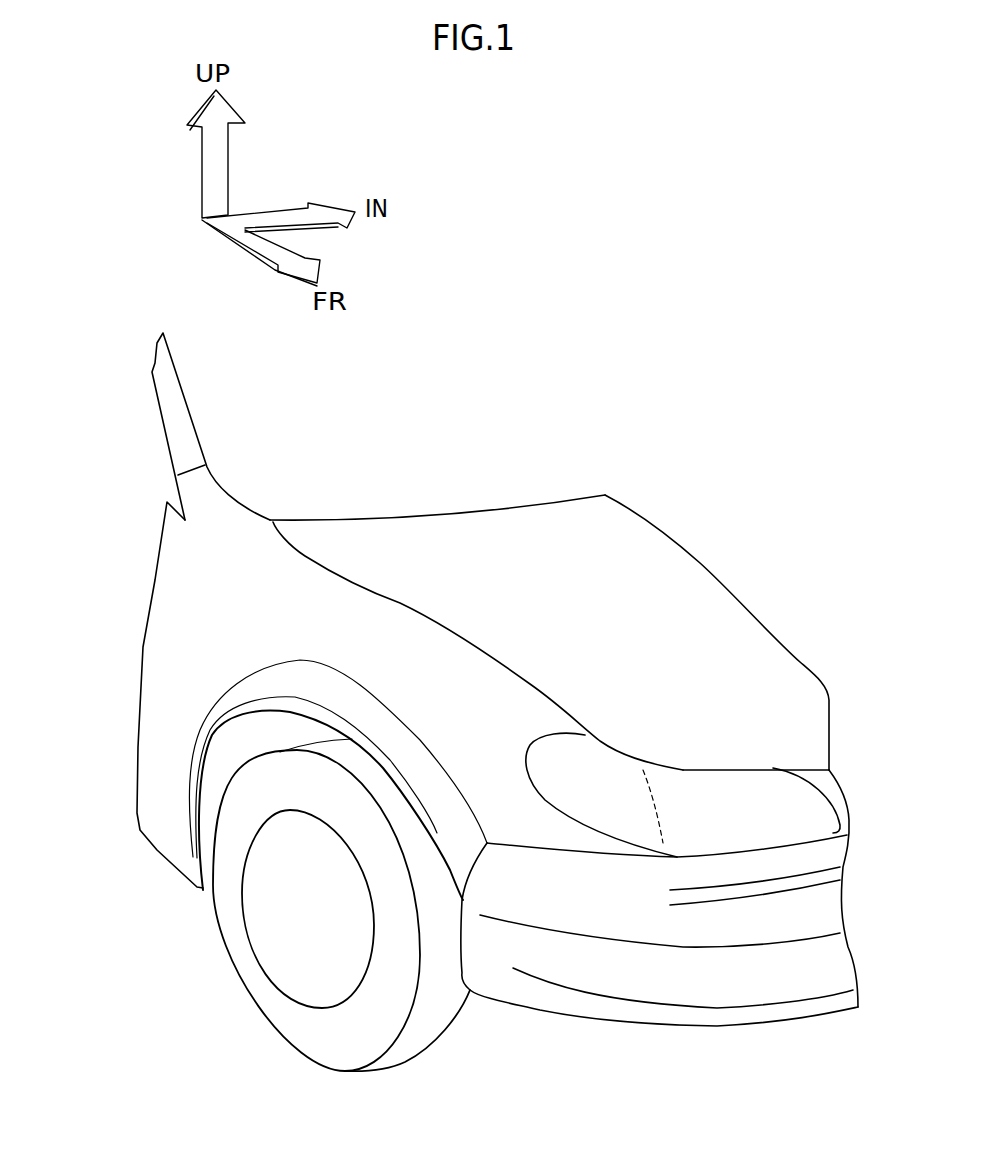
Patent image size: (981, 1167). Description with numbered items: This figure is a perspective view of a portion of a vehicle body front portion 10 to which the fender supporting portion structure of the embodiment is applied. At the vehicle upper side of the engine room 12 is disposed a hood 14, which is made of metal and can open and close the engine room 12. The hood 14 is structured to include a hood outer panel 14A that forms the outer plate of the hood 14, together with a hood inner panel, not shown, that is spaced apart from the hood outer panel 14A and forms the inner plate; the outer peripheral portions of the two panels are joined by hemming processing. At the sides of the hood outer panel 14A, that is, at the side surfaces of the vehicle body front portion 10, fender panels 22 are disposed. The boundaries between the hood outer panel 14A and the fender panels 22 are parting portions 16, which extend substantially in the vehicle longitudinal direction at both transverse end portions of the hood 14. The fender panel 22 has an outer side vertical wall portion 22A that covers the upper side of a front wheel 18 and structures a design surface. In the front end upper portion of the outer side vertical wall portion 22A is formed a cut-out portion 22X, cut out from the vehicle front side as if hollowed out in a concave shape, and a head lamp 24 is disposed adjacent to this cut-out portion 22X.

The vehicle body front portion 10 is at (667, 313).
The engine room 12 is at (562, 543).
The hood 14 is at (687, 573).
The hood outer panel 14A is at (733, 657).
The parting portion 16 is at (398, 590).
The front wheel 18 is at (315, 1045).
The fender panel 22 is at (168, 638).
The outer side vertical wall portion 22A is at (417, 652).
The cut-out portion 22X is at (577, 750).
The head lamp 24 is at (635, 822).